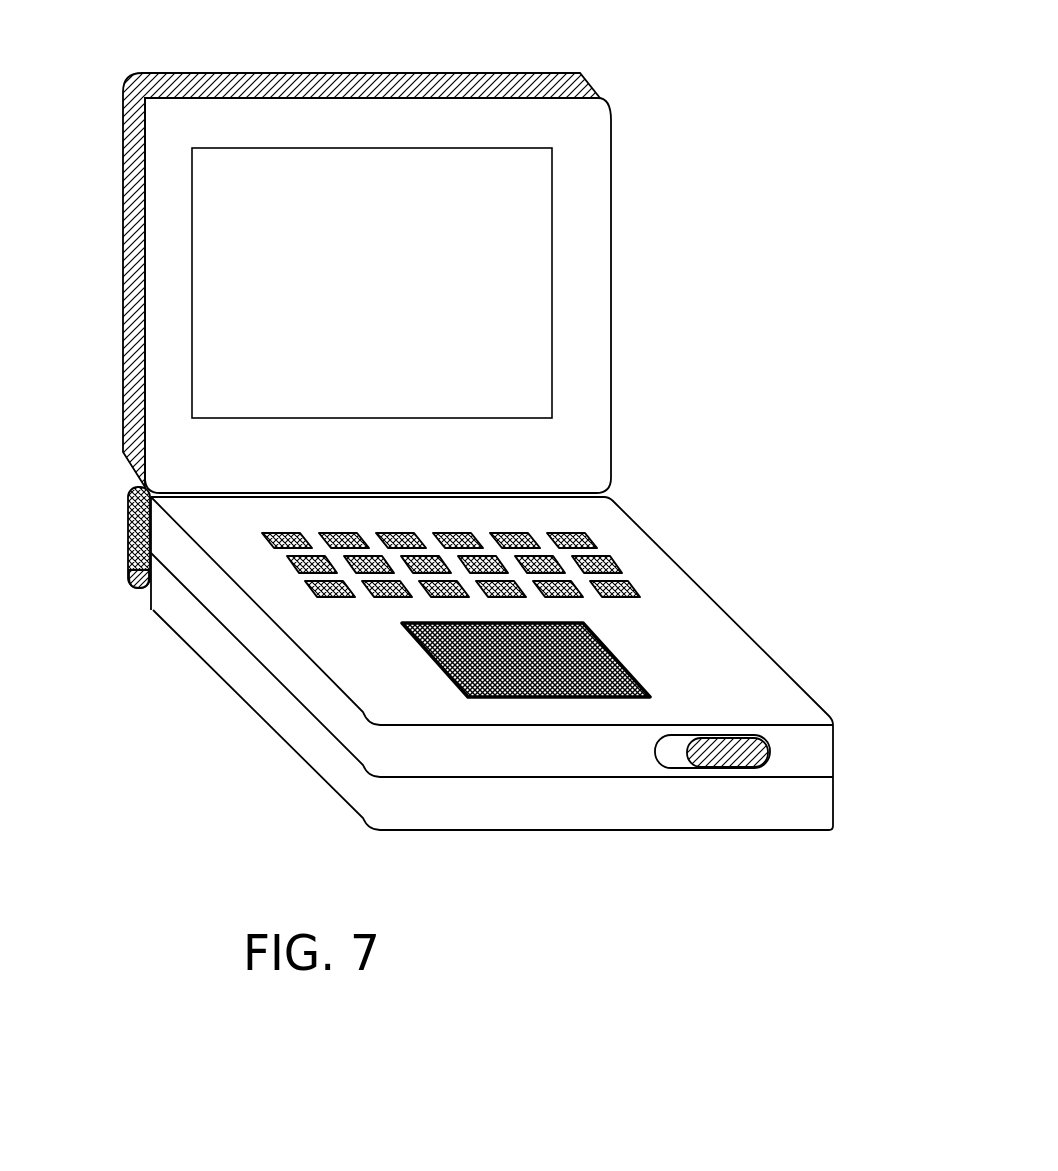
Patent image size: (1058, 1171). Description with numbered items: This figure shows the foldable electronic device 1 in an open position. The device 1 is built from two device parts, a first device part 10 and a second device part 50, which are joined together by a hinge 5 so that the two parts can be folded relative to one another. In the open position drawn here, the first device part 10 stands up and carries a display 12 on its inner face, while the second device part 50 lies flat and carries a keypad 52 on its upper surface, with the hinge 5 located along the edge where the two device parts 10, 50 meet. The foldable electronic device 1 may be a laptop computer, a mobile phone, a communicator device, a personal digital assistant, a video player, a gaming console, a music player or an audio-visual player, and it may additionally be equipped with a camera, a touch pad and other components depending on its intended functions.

The foldable electronic device 1 is at (766, 184).
The hinge 5 is at (97, 523).
The first device part 10 is at (455, 112).
The display 12 is at (530, 320).
The second device part 50 is at (857, 723).
The keypad 52 is at (620, 542).